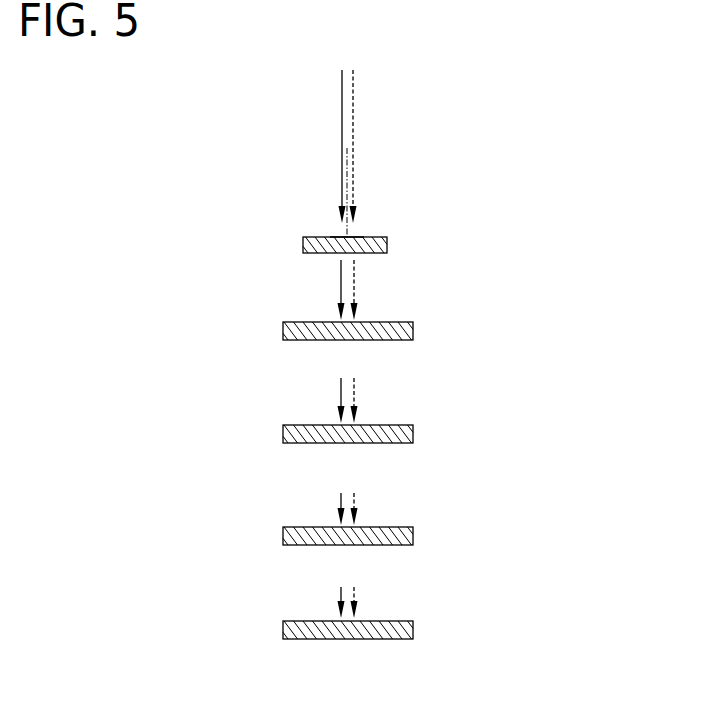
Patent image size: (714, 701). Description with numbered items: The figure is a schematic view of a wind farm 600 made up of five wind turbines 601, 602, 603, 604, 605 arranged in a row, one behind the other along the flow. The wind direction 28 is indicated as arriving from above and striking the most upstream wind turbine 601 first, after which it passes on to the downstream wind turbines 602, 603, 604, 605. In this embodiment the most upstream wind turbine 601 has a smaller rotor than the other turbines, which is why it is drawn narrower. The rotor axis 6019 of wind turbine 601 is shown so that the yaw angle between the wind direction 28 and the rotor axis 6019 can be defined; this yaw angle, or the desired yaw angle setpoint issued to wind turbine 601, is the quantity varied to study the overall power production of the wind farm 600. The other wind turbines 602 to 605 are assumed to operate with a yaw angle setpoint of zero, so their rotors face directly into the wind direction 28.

The wind direction 28 is at (354, 132).
The wind farm 600 is at (559, 152).
The wind turbine 601 is at (381, 242).
The wind turbine 602 is at (393, 323).
The wind turbine 603 is at (393, 426).
The wind turbine 604 is at (393, 528).
The wind turbine 605 is at (393, 622).
The rotor axis 6019 is at (337, 233).